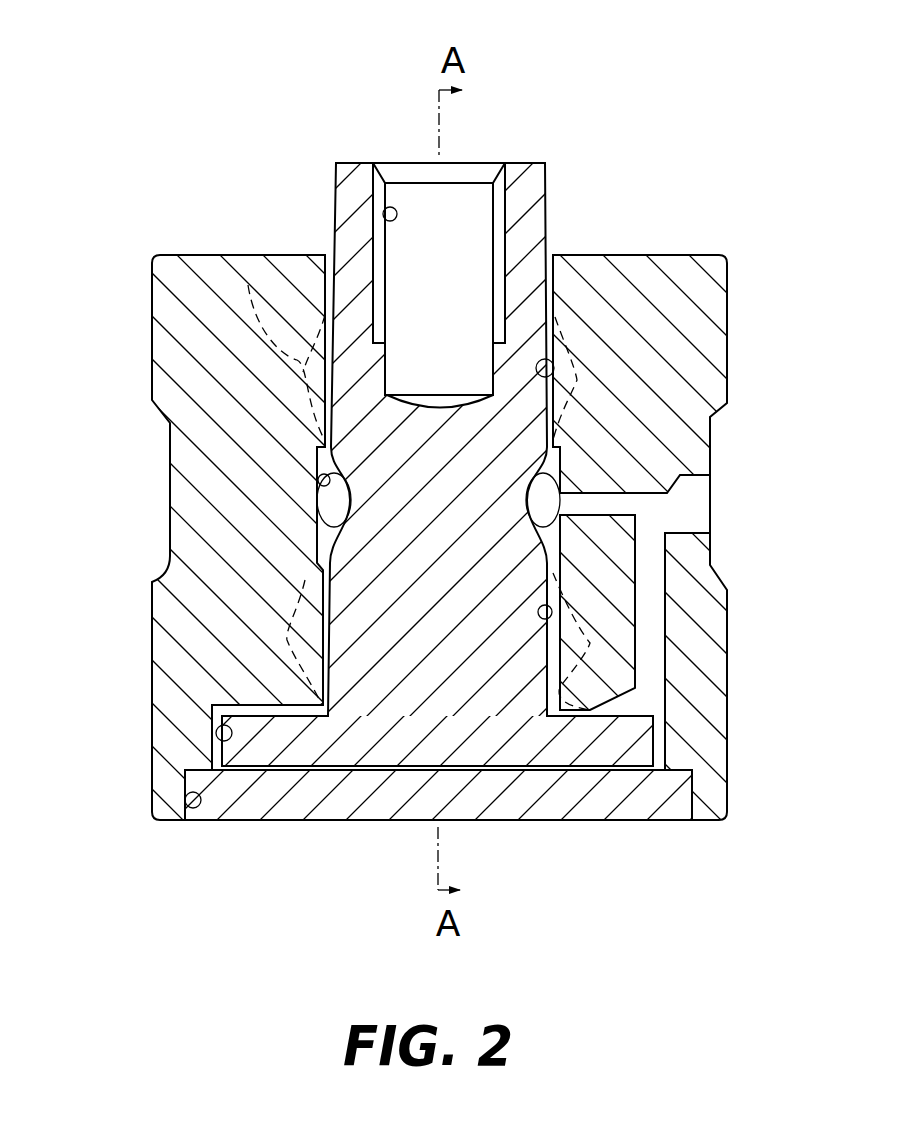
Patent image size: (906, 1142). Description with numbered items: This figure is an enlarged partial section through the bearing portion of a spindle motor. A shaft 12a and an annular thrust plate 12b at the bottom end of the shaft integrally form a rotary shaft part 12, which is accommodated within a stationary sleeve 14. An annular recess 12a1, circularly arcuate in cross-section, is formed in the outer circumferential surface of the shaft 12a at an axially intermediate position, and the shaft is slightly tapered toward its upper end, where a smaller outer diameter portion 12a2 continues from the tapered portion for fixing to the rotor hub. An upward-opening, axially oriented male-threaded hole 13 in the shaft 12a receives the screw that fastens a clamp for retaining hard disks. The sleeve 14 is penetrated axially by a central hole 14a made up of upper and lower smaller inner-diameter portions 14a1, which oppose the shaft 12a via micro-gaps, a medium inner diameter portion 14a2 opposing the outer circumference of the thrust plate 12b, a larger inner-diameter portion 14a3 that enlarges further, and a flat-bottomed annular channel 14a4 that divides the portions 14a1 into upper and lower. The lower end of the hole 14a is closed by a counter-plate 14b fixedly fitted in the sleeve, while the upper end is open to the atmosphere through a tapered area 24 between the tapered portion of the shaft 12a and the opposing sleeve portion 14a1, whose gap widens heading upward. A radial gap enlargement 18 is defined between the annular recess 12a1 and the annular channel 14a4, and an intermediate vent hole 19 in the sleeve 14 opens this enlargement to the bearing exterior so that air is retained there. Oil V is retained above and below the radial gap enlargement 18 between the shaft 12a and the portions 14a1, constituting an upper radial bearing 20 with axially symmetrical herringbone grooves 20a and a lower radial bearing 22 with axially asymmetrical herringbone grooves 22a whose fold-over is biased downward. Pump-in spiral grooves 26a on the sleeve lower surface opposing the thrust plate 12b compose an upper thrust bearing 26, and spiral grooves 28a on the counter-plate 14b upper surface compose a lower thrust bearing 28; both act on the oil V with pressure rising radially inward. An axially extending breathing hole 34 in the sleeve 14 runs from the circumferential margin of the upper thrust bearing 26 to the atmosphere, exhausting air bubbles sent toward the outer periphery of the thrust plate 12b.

The rotary shaft part 12 is at (522, 157).
The shaft 12a is at (415, 467).
The annular recess 12a1 is at (317, 460).
The smaller outer diameter portion 12a2 is at (528, 187).
The annular thrust plate 12b is at (260, 776).
The male-threaded hole 13 is at (383, 213).
The sleeve 14 is at (710, 243).
The central hole 14a is at (560, 390).
The smaller inner-diameter portions 14a1 is at (560, 390).
The medium inner diameter portion 14a2 is at (216, 727).
The larger inner-diameter portion 14a3 is at (186, 792).
The annular channel 14a4 is at (322, 440).
The counter-plate 14b is at (360, 790).
The radial gap enlargement 18 is at (333, 515).
The intermediate vent hole 19 is at (633, 502).
The upper radial bearing 20 is at (307, 322).
The herringbone grooves 20a is at (248, 285).
The lower radial bearing 22 is at (276, 583).
The herringbone grooves 22a is at (290, 640).
The tapered area 24 is at (328, 258).
The upper thrust bearing 26 is at (549, 732).
The spiral grooves 26a is at (295, 698).
The lower thrust bearing 28 is at (584, 792).
The spiral grooves 28a is at (320, 772).
The breathing hole 34 is at (650, 668).
The oil V is at (546, 358).